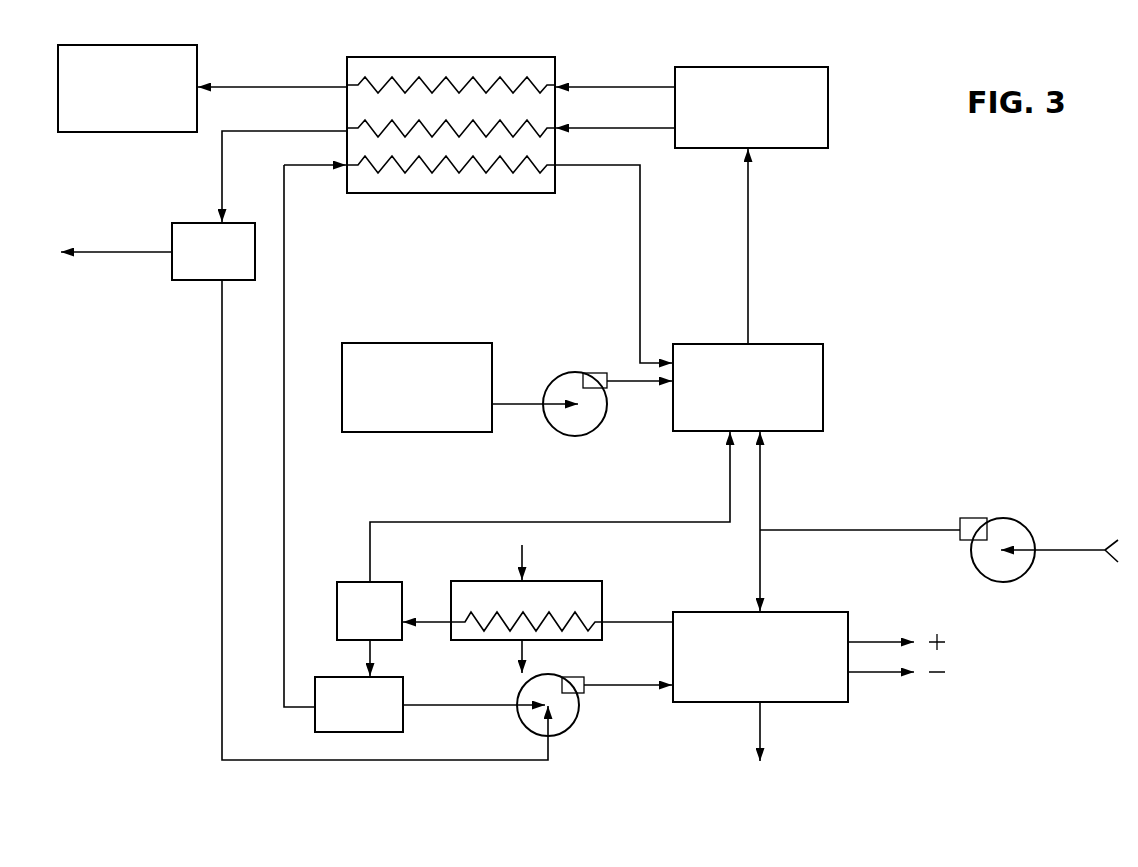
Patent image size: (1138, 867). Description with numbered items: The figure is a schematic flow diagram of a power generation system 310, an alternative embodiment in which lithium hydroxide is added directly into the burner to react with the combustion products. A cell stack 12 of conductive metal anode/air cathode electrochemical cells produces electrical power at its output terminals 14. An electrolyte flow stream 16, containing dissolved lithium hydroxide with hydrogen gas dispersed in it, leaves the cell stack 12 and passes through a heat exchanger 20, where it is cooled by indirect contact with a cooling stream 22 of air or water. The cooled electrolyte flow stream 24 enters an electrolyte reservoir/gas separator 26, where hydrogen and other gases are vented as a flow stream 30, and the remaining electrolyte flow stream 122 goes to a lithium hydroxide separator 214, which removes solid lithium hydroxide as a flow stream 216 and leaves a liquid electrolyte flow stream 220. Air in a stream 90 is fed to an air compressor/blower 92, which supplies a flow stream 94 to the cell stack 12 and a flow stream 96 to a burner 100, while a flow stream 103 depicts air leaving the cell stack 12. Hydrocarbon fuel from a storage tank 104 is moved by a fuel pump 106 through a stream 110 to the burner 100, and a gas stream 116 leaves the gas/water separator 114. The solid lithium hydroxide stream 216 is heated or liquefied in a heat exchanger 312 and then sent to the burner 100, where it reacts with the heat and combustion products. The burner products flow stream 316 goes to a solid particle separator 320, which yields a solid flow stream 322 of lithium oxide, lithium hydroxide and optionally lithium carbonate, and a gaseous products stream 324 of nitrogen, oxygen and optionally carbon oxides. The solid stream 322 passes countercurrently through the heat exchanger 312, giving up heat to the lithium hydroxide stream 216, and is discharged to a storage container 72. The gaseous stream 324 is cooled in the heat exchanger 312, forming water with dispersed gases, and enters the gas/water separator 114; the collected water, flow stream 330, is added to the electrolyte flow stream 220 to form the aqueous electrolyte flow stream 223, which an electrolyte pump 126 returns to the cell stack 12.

The cell stack 12 is at (740, 669).
The electrical output terminals 14 is at (896, 654).
The electrolyte flow stream 16 is at (617, 621).
The heat exchanger 20 is at (568, 581).
The cooling stream 22 is at (522, 567).
The cooled electrolyte flow stream 24 is at (426, 622).
The electrolyte reservoir/gas separator 26 is at (356, 623).
The flow stream of vented gases 30 is at (428, 522).
The storage container 72 is at (113, 100).
The air stream 90 is at (855, 522).
The air compressor/blower 92 is at (1012, 520).
The air flow stream to cell stack 94 is at (763, 568).
The air flow stream to burner 96 is at (762, 500).
The burner 100 is at (726, 400).
The air outflow stream 103 is at (762, 737).
The hydrocarbon fuel storage tank 104 is at (397, 400).
The fuel pump 106 is at (585, 421).
The fuel stream 110 is at (618, 377).
The gas/water separator 114 is at (196, 264).
The burner exhaust gas stream 116 is at (108, 251).
The electrolyte flow stream 122 is at (370, 655).
The electrolyte pump 126 is at (567, 717).
The lithium hydroxide separator 214 is at (339, 717).
The solid lithium hydroxide flow stream 216 is at (284, 302).
The liquid electrolyte flow stream 220 is at (483, 706).
The aqueous electrolyte flow stream 223 is at (635, 690).
The power generation system 310 is at (899, 228).
The heat exchanger 312 is at (508, 57).
The burner products flow stream 316 is at (748, 245).
The solid particle separator 320 is at (731, 120).
The solid flow stream 322 is at (242, 87).
The gaseous products stream 324 is at (236, 131).
The water flow stream 330 is at (220, 468).